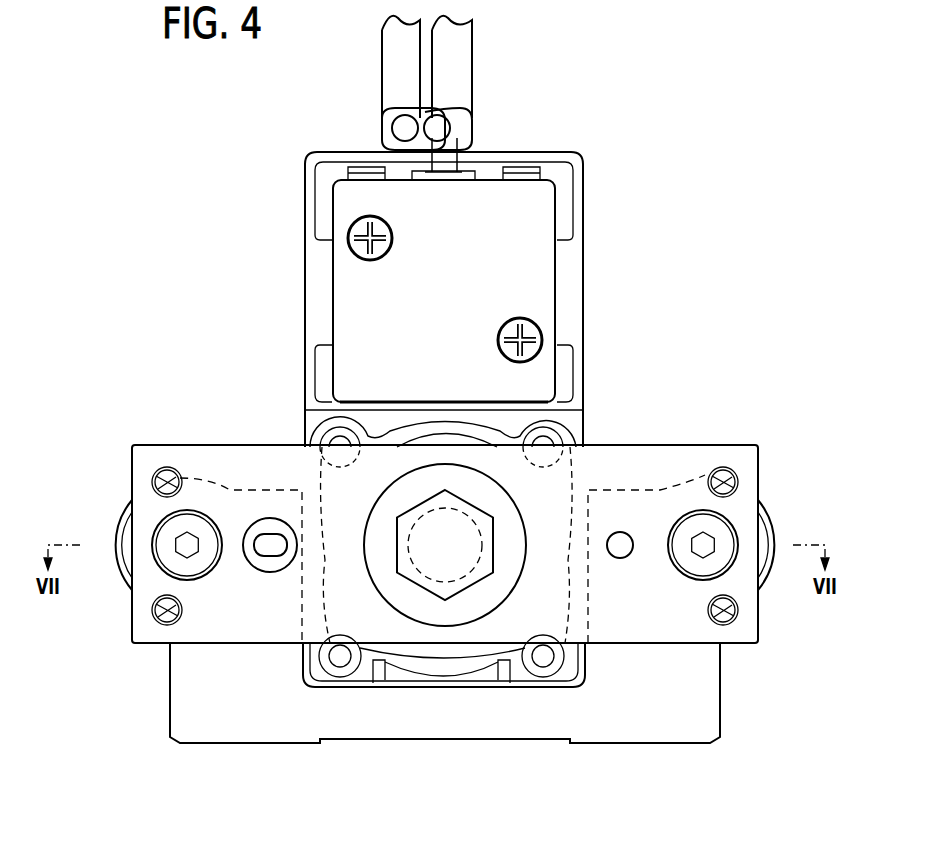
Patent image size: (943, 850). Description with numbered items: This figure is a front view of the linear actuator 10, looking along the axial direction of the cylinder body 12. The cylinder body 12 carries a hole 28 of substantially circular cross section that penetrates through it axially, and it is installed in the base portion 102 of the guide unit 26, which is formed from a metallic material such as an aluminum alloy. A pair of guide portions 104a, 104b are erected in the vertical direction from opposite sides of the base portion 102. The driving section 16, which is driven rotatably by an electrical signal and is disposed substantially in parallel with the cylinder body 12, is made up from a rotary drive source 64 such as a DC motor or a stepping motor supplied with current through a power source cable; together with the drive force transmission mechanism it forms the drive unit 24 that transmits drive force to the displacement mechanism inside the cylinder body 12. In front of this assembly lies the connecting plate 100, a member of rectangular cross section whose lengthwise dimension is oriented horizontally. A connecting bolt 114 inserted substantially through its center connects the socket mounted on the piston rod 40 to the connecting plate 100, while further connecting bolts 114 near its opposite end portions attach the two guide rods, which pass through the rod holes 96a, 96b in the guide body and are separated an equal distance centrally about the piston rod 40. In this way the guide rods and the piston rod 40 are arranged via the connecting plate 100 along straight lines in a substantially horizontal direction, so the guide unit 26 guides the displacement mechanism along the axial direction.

The linear actuator 10 is at (241, 105).
The cylinder body 12 is at (538, 675).
The driving section 16 is at (510, 135).
The drive unit 24 is at (604, 307).
The guide unit 26 is at (285, 746).
The hole 28 is at (423, 628).
The piston rod 40 is at (455, 530).
The rotary drive source 64 is at (307, 296).
The rod hole 96a is at (147, 540).
The rod hole 96b is at (745, 540).
The connecting plate 100 is at (658, 463).
The base portion 102 is at (398, 727).
The guide portion 104a is at (175, 688).
The guide portion 104b is at (700, 687).
The connecting bolt 114 is at (430, 540).